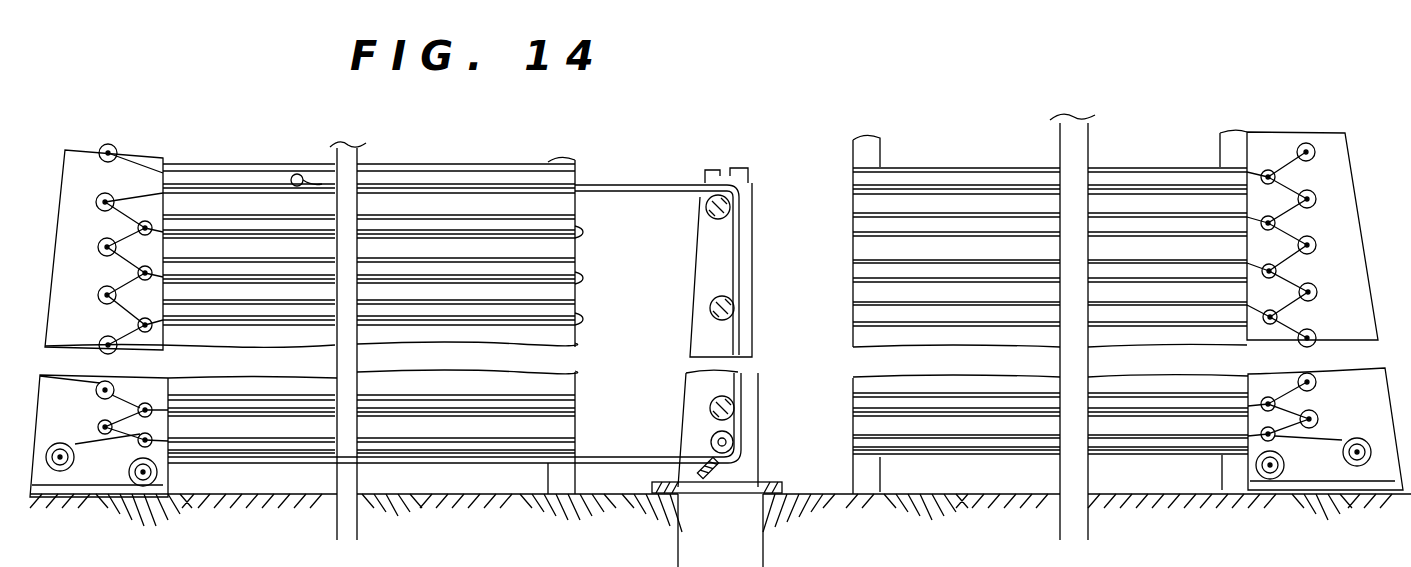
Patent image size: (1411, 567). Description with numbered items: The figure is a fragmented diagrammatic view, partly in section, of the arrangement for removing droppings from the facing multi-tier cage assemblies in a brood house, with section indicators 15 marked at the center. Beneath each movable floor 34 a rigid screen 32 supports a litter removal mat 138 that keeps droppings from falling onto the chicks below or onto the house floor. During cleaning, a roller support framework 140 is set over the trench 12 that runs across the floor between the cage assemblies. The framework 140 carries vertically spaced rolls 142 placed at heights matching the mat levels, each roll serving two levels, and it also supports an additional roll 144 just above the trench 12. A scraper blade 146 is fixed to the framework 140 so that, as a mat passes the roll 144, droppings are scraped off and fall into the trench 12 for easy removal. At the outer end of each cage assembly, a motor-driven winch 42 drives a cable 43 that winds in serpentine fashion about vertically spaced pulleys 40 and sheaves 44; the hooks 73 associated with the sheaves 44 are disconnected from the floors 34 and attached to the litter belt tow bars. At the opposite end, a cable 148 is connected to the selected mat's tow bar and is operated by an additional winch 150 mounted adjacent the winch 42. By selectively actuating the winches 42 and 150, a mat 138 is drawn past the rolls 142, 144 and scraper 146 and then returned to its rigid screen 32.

The trench 12 is at (742, 541).
The section line 15 is at (790, 179).
The rigid screen 32 is at (578, 241).
The movable floor 34 is at (490, 167).
The pulley 40 is at (104, 194).
The motor-driven winch 42 is at (98, 454).
The winch-driven cable 43 is at (138, 324).
The sheave 44 is at (297, 174).
The hook 73 is at (148, 237).
The litter removal mat 138 is at (577, 229).
The roller support framework 140 is at (760, 382).
The roll 142 is at (703, 213).
The additional roll 144 is at (710, 443).
The scraper blade 146 is at (726, 470).
The cable 148 is at (473, 466).
The additional winch 150 is at (160, 476).